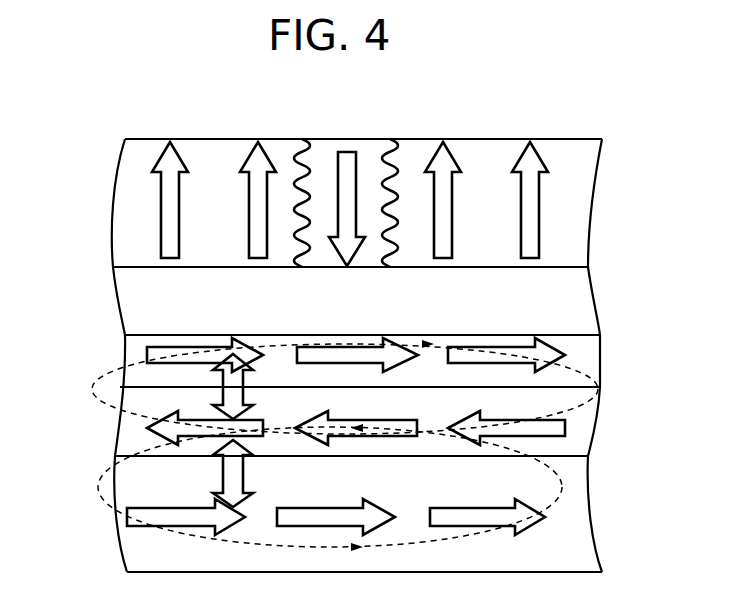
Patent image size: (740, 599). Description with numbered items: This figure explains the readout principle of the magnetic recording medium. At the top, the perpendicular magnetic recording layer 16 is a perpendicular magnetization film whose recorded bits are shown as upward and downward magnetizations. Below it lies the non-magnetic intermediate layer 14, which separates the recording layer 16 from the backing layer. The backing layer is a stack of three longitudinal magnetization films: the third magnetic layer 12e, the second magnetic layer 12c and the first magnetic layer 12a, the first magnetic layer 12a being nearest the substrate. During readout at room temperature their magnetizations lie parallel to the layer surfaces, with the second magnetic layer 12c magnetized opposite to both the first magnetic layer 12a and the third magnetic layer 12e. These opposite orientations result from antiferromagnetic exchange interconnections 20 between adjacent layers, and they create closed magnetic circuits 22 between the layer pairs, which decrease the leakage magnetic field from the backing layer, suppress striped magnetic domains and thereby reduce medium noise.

The perpendicular magnetic recording layer 16 is at (585, 208).
The intermediate layer 14 is at (588, 303).
The third magnetic layer 12e is at (590, 358).
The second magnetic layer 12c is at (585, 433).
The first magnetic layer 12a is at (585, 518).
The antiferromagnetic exchange interconnection 20 is at (223, 377).
The closed magnetic circuit 22 is at (115, 372).